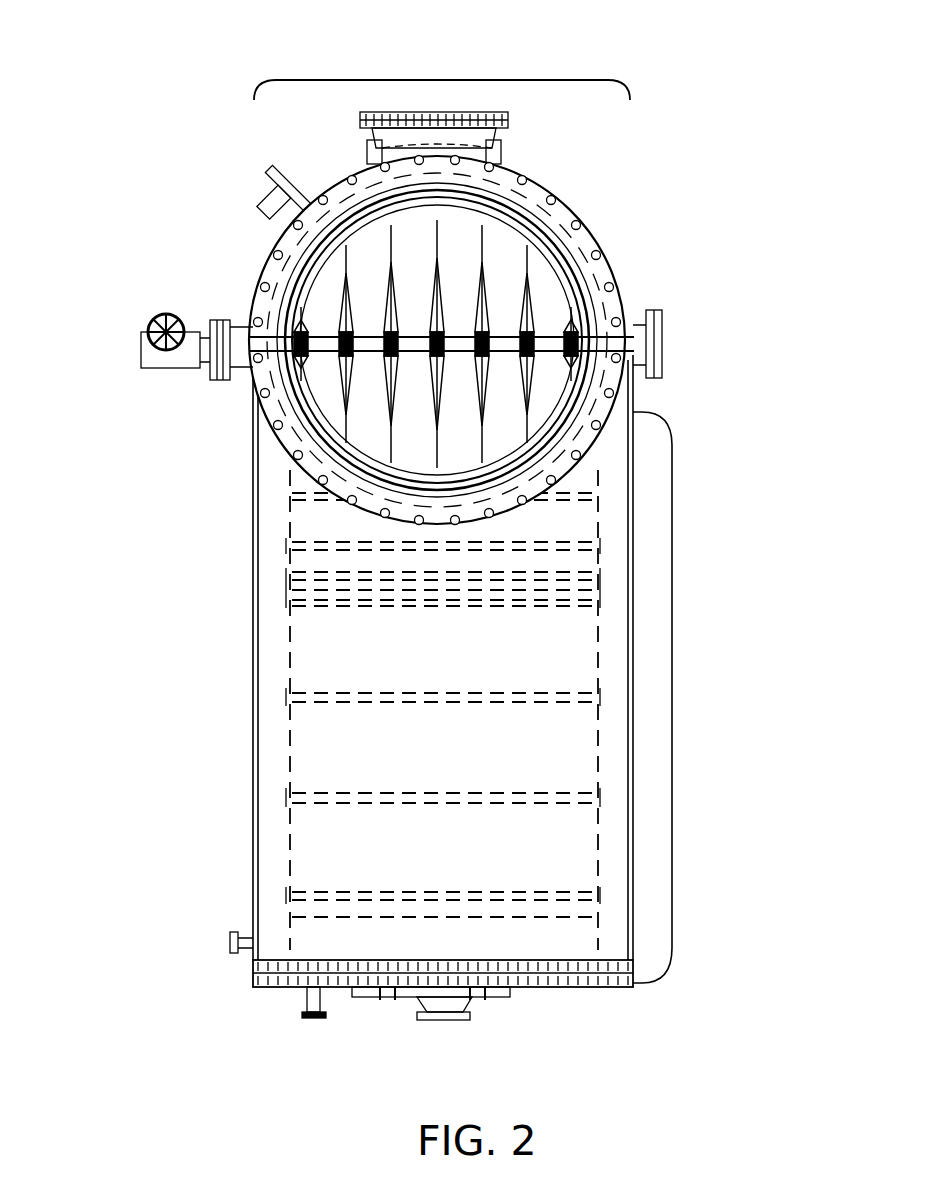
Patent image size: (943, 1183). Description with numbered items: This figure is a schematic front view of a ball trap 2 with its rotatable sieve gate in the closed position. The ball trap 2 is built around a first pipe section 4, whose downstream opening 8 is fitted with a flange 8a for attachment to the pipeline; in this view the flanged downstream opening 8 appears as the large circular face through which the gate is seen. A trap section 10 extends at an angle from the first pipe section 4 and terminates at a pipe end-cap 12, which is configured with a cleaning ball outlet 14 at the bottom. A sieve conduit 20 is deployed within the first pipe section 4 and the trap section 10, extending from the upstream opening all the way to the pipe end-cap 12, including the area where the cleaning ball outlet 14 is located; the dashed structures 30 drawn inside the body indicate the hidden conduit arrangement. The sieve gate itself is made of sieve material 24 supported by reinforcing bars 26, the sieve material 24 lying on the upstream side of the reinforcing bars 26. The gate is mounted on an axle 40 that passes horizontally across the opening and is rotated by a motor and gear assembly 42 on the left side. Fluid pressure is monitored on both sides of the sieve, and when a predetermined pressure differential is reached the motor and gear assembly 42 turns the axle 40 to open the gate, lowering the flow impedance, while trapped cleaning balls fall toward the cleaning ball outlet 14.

The ball trap 2 is at (160, 103).
The first pipe section 4 is at (422, 80).
The downstream opening 8 is at (645, 218).
The flange 8a is at (565, 195).
The trap section 10 is at (672, 740).
The pipe end-cap 12 is at (310, 977).
The cleaning ball outlet 14 is at (467, 1018).
The sieve conduit 20 is at (345, 657).
The sieve material 24 is at (497, 285).
The reinforcing bars 26 is at (527, 393).
The baffle 30 is at (280, 802).
The axle 40 is at (345, 330).
The motor and gear assembly 42 is at (175, 359).